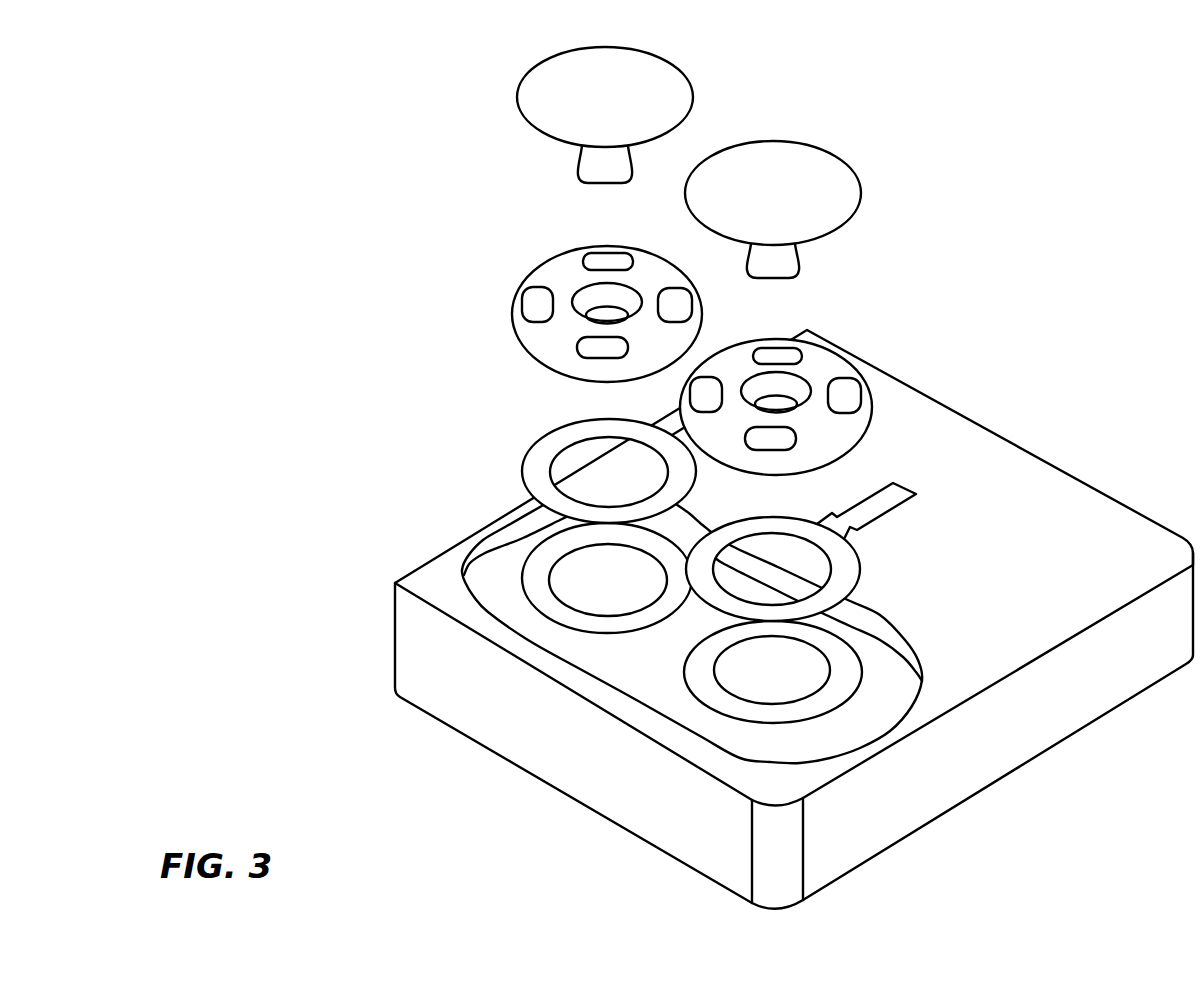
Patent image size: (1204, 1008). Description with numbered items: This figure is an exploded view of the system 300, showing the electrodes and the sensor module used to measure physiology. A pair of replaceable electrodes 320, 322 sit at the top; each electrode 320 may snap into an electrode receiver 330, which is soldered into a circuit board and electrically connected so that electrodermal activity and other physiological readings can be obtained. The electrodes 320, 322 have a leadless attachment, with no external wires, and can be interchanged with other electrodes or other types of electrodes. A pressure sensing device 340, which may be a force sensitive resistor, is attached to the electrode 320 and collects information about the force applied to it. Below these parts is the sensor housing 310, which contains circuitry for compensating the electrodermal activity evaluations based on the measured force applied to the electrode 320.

The system 300 is at (319, 117).
The sensor housing 310 is at (395, 627).
The electrode 320 is at (520, 117).
The electrode 322 is at (862, 184).
The electrode receiver 330 is at (513, 300).
The pressure sensing device 340 is at (537, 440).